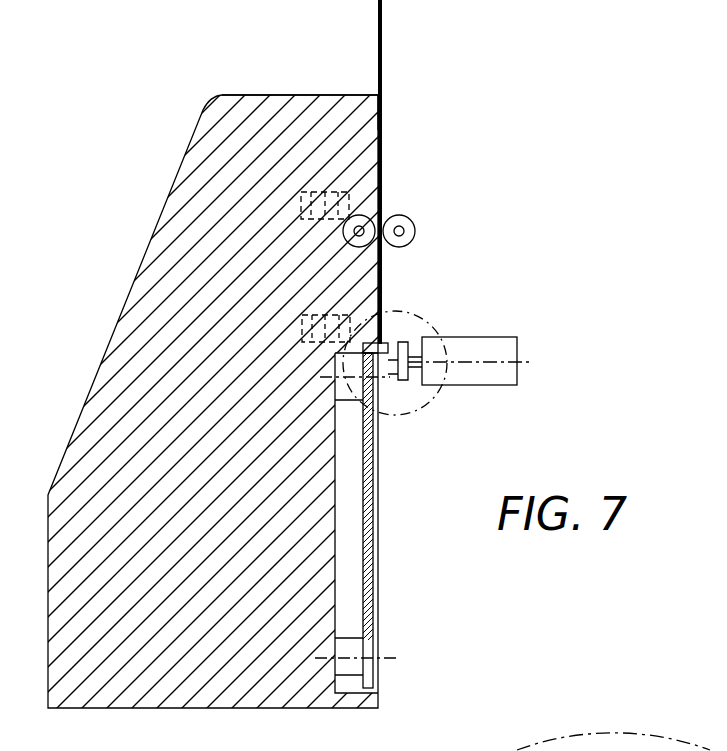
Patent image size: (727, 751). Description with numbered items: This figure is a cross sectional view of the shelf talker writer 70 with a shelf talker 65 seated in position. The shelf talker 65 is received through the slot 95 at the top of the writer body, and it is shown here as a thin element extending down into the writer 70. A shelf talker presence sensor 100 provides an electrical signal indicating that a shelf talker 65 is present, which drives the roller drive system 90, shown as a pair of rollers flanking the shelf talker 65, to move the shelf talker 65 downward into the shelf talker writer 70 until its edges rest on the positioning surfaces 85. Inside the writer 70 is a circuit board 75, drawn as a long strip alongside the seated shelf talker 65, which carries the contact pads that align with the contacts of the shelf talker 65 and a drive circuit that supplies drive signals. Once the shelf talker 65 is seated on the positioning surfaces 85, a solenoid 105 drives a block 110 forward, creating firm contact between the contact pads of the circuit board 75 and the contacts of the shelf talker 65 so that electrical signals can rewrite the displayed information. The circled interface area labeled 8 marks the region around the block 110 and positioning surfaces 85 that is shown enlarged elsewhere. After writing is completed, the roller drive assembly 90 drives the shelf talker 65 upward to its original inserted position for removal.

The shelf talker 65 is at (381, 30).
The shelf talker writer 70 is at (72, 430).
The circuit board 75 is at (373, 507).
The positioning surfaces 85 is at (390, 343).
The roller drive system 90 is at (412, 217).
The slot 95 is at (373, 100).
The shelf talker presence sensor 100 is at (337, 192).
The solenoid 105 is at (517, 341).
The block 110 is at (326, 315).
The detail circle 8 is at (428, 412).